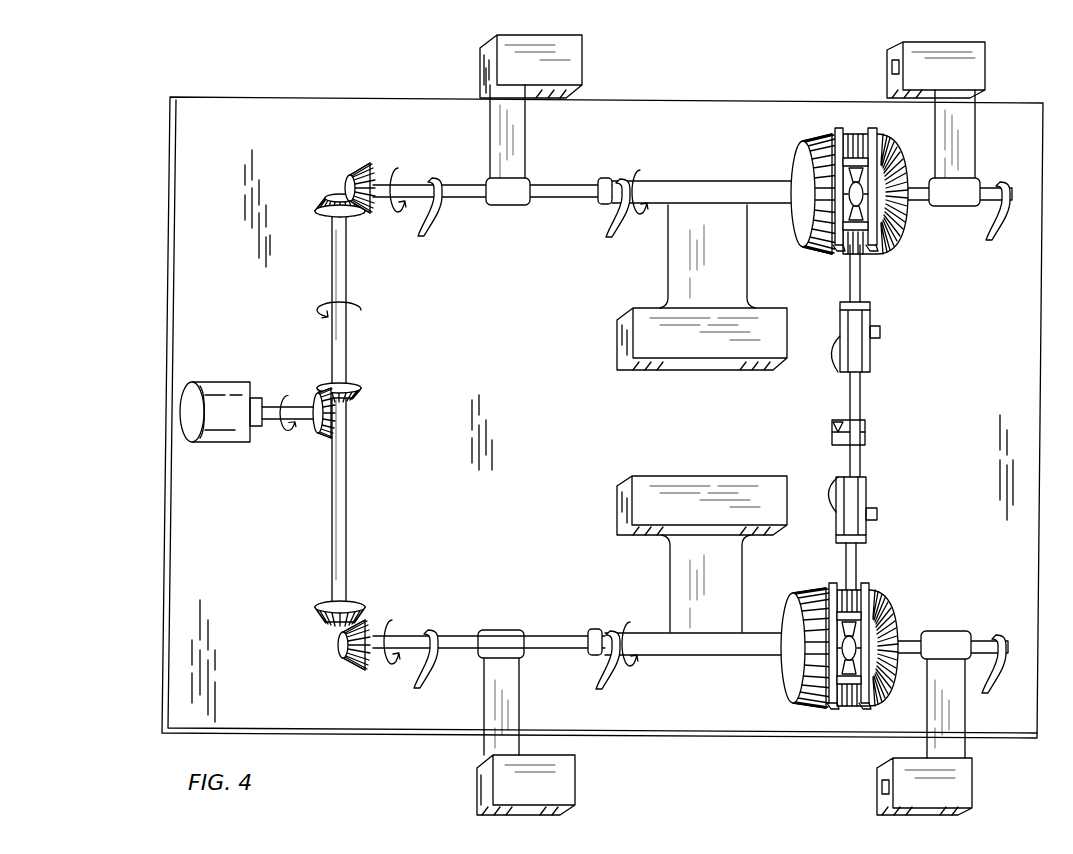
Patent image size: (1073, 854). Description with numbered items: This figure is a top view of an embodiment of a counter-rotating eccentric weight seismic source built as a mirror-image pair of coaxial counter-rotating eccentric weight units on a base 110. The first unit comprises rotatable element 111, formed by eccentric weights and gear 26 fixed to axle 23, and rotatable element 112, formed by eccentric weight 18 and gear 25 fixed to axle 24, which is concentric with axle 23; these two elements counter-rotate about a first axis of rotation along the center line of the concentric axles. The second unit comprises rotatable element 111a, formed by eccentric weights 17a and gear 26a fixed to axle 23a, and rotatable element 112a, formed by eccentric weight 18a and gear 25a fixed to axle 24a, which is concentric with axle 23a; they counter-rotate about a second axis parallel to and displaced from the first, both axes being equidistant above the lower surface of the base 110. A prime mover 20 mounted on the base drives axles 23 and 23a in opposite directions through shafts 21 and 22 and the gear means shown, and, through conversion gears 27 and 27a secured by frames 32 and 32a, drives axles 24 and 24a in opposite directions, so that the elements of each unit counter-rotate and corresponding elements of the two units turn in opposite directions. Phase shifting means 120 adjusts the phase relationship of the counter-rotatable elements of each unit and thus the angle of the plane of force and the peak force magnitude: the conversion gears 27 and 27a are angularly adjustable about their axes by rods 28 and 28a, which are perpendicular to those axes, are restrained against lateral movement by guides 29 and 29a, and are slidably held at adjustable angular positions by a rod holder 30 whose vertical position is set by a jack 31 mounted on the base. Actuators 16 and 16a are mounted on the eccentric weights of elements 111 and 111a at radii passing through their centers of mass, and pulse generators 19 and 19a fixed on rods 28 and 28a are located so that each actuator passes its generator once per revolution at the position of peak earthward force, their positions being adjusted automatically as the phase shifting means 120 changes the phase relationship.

The base 110 is at (178, 619).
The rotatable element 111 is at (478, 777).
The rotatable element 111a is at (483, 72).
The rotatable element 112 is at (667, 483).
The rotatable element 112a is at (663, 355).
The actuator 16 is at (878, 786).
The actuator 16a is at (888, 66).
The eccentric weights 17a is at (724, 428).
The eccentric weight 18 is at (617, 513).
The eccentric weight 18a is at (617, 343).
The pulse generator 19 is at (878, 514).
The pulse generator 19a is at (880, 331).
The prime mover 20 is at (218, 382).
The shaft 21 is at (290, 420).
The shaft 22 is at (347, 496).
The axle 23 is at (548, 638).
The axle 23a is at (546, 190).
The axle 24 is at (672, 654).
The axle 24a is at (690, 192).
The gear 25 is at (793, 680).
The gear 25a is at (810, 158).
The gear 26 is at (898, 620).
The gear 26a is at (907, 228).
The conversion gear 27 is at (880, 590).
The conversion gear 27a is at (877, 142).
The rod 28 is at (847, 560).
The rod 28a is at (860, 278).
The guide 29 is at (881, 510).
The guide 29a is at (862, 348).
The rod holder 30 is at (866, 424).
The jack 31 is at (832, 430).
The frame 32 is at (857, 706).
The frame 32a is at (838, 132).
The phase shifting means 120 is at (862, 411).